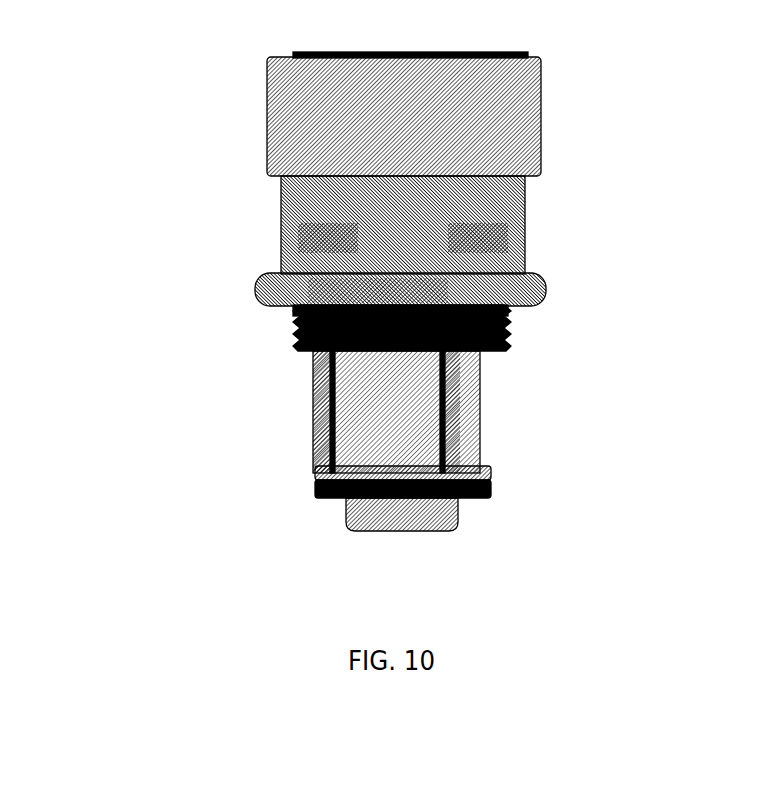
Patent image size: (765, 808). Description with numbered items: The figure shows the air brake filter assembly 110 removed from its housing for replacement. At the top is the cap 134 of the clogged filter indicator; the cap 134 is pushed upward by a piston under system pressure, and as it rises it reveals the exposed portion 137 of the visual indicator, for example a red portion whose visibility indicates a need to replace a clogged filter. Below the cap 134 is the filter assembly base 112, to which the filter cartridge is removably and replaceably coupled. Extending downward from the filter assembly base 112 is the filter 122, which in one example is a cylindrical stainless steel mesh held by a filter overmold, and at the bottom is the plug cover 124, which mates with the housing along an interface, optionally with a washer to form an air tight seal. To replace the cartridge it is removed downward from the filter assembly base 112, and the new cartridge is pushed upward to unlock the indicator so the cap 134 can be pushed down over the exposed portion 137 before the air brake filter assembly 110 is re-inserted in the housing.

The air brake filter assembly 110 is at (367, 274).
The cap 134 is at (533, 72).
The exposed portion 137 is at (273, 193).
The filter assembly base 112 is at (538, 274).
The filter 122 is at (472, 406).
The plug cover 124 is at (450, 498).